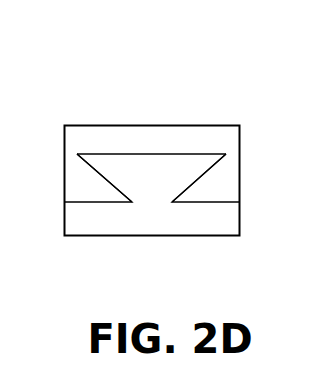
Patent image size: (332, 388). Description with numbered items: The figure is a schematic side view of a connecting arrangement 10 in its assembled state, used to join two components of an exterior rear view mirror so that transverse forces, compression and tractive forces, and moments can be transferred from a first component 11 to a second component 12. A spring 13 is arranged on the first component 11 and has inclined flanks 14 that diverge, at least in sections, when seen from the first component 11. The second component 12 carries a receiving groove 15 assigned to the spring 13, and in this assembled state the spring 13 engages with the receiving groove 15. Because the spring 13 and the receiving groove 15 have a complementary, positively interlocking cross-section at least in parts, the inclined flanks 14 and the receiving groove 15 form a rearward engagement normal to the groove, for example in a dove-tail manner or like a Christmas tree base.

The connecting arrangement 10 is at (115, 99).
The first component 11 is at (217, 225).
The second component 12 is at (87, 137).
The spring 13 is at (150, 187).
The inclined flanks 14 is at (105, 180).
The receiving groove 15 is at (192, 153).